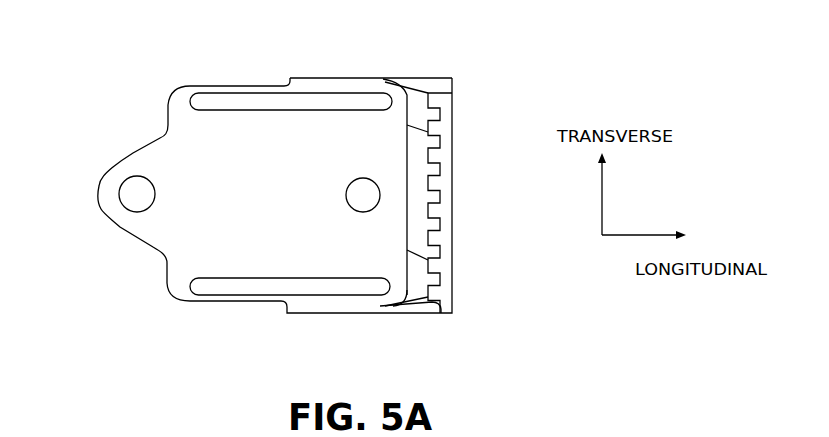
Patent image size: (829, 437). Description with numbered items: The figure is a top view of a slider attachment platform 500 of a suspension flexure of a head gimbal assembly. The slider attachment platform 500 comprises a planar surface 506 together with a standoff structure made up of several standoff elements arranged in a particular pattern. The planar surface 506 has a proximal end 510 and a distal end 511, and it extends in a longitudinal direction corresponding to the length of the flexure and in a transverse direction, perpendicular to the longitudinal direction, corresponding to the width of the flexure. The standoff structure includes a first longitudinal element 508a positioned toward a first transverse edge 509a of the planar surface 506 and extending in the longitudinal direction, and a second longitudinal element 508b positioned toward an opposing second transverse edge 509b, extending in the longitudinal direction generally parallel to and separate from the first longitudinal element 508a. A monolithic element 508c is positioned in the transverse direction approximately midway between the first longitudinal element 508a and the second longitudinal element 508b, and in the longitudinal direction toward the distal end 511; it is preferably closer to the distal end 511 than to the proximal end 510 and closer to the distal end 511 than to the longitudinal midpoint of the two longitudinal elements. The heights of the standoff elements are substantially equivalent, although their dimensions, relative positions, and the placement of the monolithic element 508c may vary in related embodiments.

The slider attachment platform 500 is at (121, 71).
The planar surface 506 is at (165, 231).
The proximal end 510 is at (96, 186).
The first transverse edge 509a is at (350, 313).
The second transverse edge 509b is at (355, 77).
The first longitudinal element 508a is at (373, 287).
The second longitudinal element 508b is at (388, 81).
The monolithic element 508c is at (370, 195).
The distal end 511 is at (452, 247).